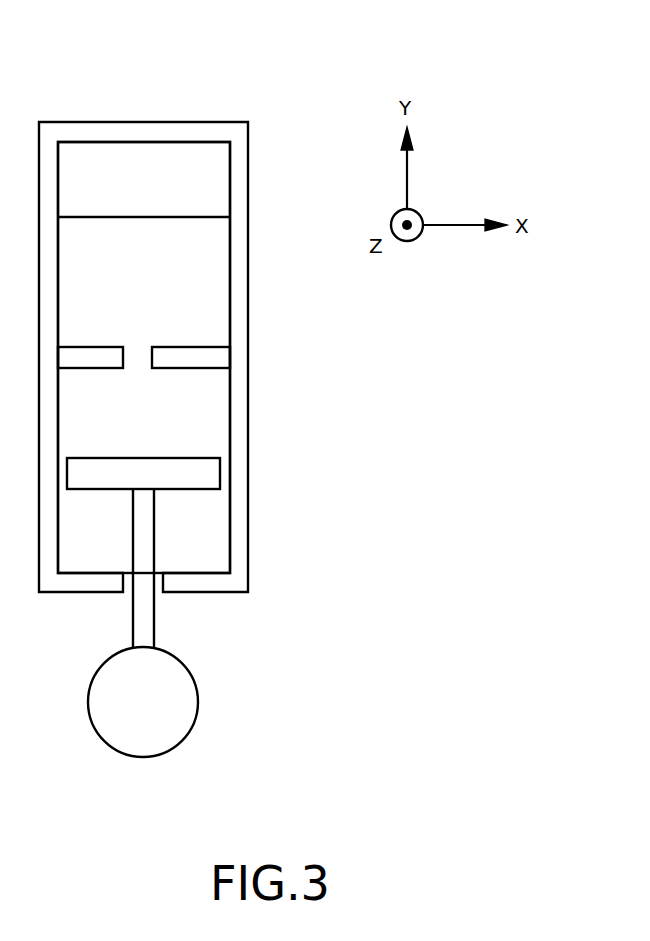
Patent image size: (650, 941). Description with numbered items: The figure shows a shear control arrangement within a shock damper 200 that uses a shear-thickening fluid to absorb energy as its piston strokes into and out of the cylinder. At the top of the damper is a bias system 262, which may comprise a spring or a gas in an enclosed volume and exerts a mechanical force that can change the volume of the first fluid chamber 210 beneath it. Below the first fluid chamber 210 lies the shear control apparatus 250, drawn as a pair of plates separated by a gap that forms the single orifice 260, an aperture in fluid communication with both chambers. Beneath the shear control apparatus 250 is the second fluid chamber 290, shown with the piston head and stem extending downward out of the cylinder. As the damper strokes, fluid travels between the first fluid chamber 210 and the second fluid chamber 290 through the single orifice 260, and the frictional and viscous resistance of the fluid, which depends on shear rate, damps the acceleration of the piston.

The shock damper 200 is at (270, 86).
The bias system 262 is at (183, 142).
The first fluid chamber 210 is at (98, 270).
The shear control apparatus 250 is at (253, 342).
The single orifice 260 is at (138, 348).
The second fluid chamber 290 is at (160, 449).